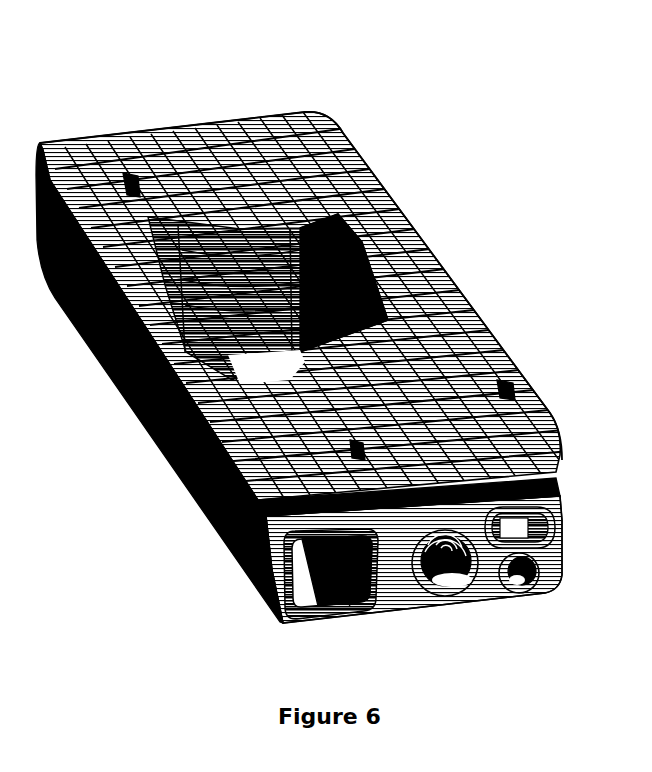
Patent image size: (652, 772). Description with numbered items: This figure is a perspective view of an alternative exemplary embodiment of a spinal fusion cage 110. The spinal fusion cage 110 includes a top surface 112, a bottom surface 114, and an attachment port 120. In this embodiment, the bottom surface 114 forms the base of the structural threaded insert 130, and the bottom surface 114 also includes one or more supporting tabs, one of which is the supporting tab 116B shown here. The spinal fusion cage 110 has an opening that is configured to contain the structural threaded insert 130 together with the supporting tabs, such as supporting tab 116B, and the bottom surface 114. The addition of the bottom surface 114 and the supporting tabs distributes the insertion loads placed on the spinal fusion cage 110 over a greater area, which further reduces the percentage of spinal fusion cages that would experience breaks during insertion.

The spinal fusion cage 110 is at (532, 208).
The top surface 112 is at (137, 178).
The bottom surface 114 is at (173, 492).
The supporting tab 116B is at (346, 276).
The attachment port 120 is at (440, 578).
The structural threaded insert 130 is at (428, 580).